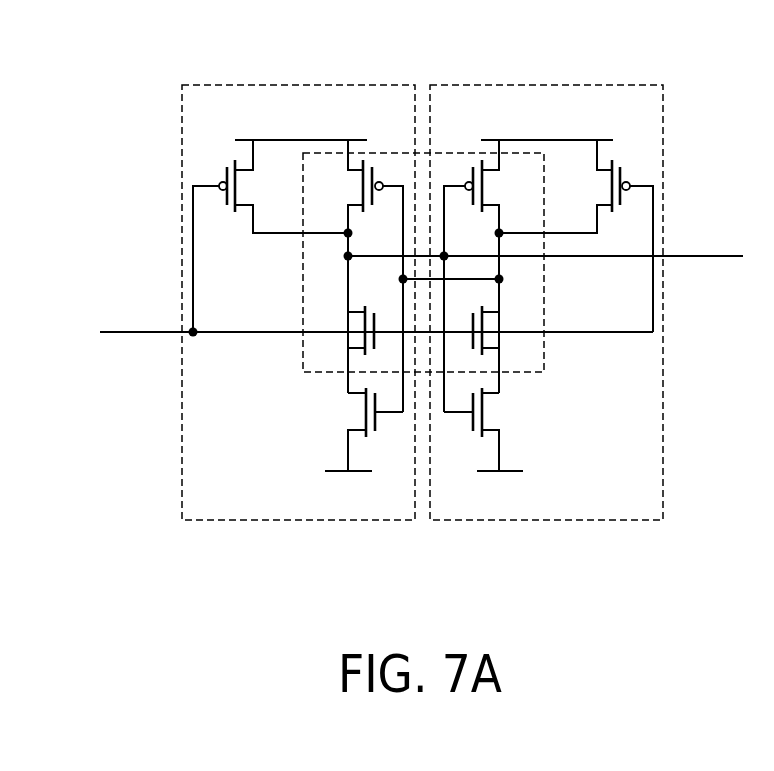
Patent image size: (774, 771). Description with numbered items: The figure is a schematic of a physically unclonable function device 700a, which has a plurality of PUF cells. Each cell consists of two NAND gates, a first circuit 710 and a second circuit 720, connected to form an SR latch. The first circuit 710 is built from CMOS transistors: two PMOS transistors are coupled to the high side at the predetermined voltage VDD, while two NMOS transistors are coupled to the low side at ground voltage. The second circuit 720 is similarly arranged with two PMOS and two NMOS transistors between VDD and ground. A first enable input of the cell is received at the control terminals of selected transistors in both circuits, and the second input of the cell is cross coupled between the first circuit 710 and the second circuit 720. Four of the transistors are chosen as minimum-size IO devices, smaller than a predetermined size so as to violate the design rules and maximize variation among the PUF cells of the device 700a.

The first circuit 710 is at (341, 83).
The second circuit 720 is at (590, 83).
The PUF device 700a is at (690, 592).